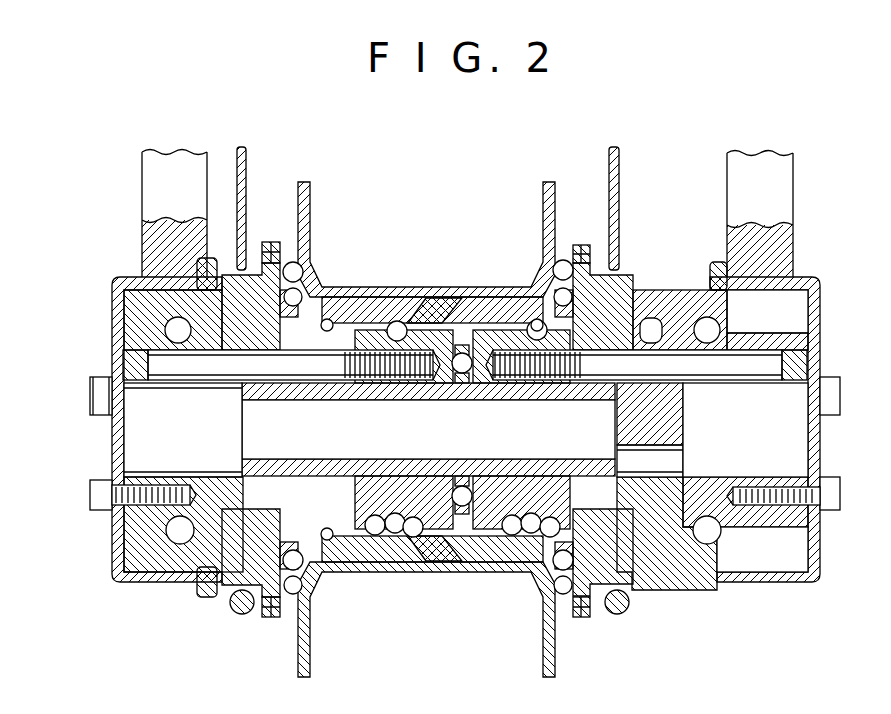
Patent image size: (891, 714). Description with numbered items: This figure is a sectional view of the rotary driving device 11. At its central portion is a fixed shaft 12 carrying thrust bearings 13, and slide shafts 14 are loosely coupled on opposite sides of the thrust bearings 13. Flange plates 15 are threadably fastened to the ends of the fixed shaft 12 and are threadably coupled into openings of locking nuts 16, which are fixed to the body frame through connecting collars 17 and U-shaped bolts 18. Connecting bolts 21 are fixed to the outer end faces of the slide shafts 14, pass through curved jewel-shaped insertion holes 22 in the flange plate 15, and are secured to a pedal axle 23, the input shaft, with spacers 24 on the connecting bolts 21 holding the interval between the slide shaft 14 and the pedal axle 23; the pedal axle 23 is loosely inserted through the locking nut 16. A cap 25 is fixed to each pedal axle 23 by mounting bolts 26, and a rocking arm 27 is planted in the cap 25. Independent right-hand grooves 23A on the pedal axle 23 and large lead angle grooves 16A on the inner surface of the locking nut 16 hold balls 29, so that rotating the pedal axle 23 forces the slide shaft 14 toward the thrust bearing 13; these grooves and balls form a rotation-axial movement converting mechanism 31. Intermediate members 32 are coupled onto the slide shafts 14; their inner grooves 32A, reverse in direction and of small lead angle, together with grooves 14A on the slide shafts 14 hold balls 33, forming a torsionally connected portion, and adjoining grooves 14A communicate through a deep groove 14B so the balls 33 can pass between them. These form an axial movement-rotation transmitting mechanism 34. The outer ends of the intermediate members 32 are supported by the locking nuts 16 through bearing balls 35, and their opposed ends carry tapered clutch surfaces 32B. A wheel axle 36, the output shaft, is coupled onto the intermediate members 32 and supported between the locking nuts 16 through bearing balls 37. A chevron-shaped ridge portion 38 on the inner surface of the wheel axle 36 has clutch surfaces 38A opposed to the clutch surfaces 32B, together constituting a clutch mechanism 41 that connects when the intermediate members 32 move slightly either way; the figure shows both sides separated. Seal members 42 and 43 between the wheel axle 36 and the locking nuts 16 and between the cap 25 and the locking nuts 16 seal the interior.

The rotary driving device 11 is at (108, 197).
The fixed shaft 12 is at (493, 385).
The thrust bearings 13 is at (462, 385).
The slide shafts 14 is at (358, 300).
The grooves 14A is at (397, 320).
The deep groove 14B is at (382, 510).
The flange plates 15 is at (245, 345).
The locking nuts 16 is at (678, 560).
The grooves 16A is at (125, 324).
The connecting collars 17 is at (247, 158).
The U-shaped bolts 18 is at (242, 616).
The connecting bolts 21 is at (738, 360).
The insertion holes 22 is at (247, 343).
The pedal axle 23 is at (128, 340).
The grooves 23A is at (125, 292).
The spacers 24 is at (675, 300).
The cap 25 is at (820, 362).
The mounting bolts 26 is at (95, 396).
The rocking arm 27 is at (155, 178).
The ball 29 is at (125, 298).
The rotation-axial movement converting mechanism 31 is at (58, 268).
The intermediate members 32 is at (350, 548).
The grooves 32A is at (345, 296).
The tapered clutch surfaces 32B is at (450, 300).
The balls 33 is at (402, 320).
The axial movement-rotation transmitting mechanism 34 is at (350, 191).
The bearing balls 35 is at (303, 290).
The wheel axle 36 is at (316, 288).
The bearing balls 37 is at (296, 263).
The ridge portion 38 is at (429, 383).
The clutch surfaces 38A is at (415, 312).
The clutch mechanism 41 is at (482, 236).
The seal member 42 is at (276, 248).
The seal member 43 is at (208, 266).